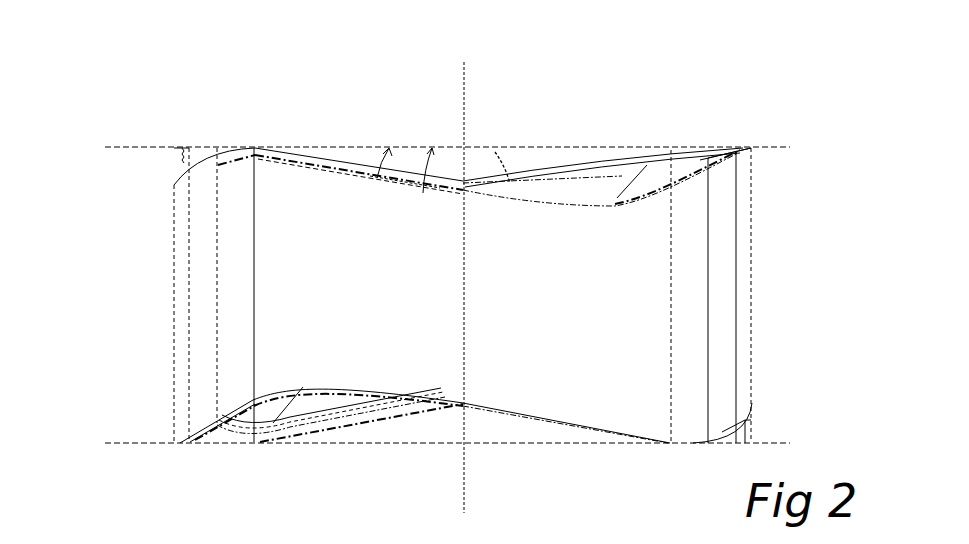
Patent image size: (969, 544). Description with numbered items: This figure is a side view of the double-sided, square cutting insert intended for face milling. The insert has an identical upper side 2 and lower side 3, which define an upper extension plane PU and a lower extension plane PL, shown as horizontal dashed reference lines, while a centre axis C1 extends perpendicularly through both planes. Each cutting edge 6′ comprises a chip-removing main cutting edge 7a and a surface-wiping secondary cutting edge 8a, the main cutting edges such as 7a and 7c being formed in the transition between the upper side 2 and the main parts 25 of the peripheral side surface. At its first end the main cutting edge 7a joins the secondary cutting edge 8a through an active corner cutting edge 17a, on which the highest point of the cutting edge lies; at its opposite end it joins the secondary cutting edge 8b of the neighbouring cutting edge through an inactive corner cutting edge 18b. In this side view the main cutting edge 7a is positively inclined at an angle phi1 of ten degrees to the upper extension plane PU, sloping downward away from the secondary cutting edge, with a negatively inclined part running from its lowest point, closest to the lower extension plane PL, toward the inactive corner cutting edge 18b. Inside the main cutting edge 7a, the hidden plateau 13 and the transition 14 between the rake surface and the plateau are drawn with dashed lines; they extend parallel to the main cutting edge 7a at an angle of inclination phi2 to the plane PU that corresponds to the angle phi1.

The upper side 2 is at (578, 195).
The lower side 3 is at (509, 413).
The cutting edge 6′ is at (603, 430).
The main cutting edge 7a is at (352, 167).
The main cutting edge 7c is at (612, 160).
The surface-wiping secondary cutting edge 8a is at (203, 162).
The surface-wiping secondary cutting edge 8b is at (725, 155).
The plateau 13 is at (400, 178).
The transition 14 is at (359, 180).
The active corner cutting edge 17a is at (243, 148).
The inactive corner cutting edge 18b is at (688, 182).
The main part of the side surface 25 is at (494, 304).
The upper extension plane PU is at (428, 144).
The lower extension plane PL is at (428, 440).
The centre axis C1 is at (483, 277).
The angle of inclination of the main cutting edge phi1 is at (387, 160).
The angle of inclination of the plateau and transition phi2 is at (495, 152).